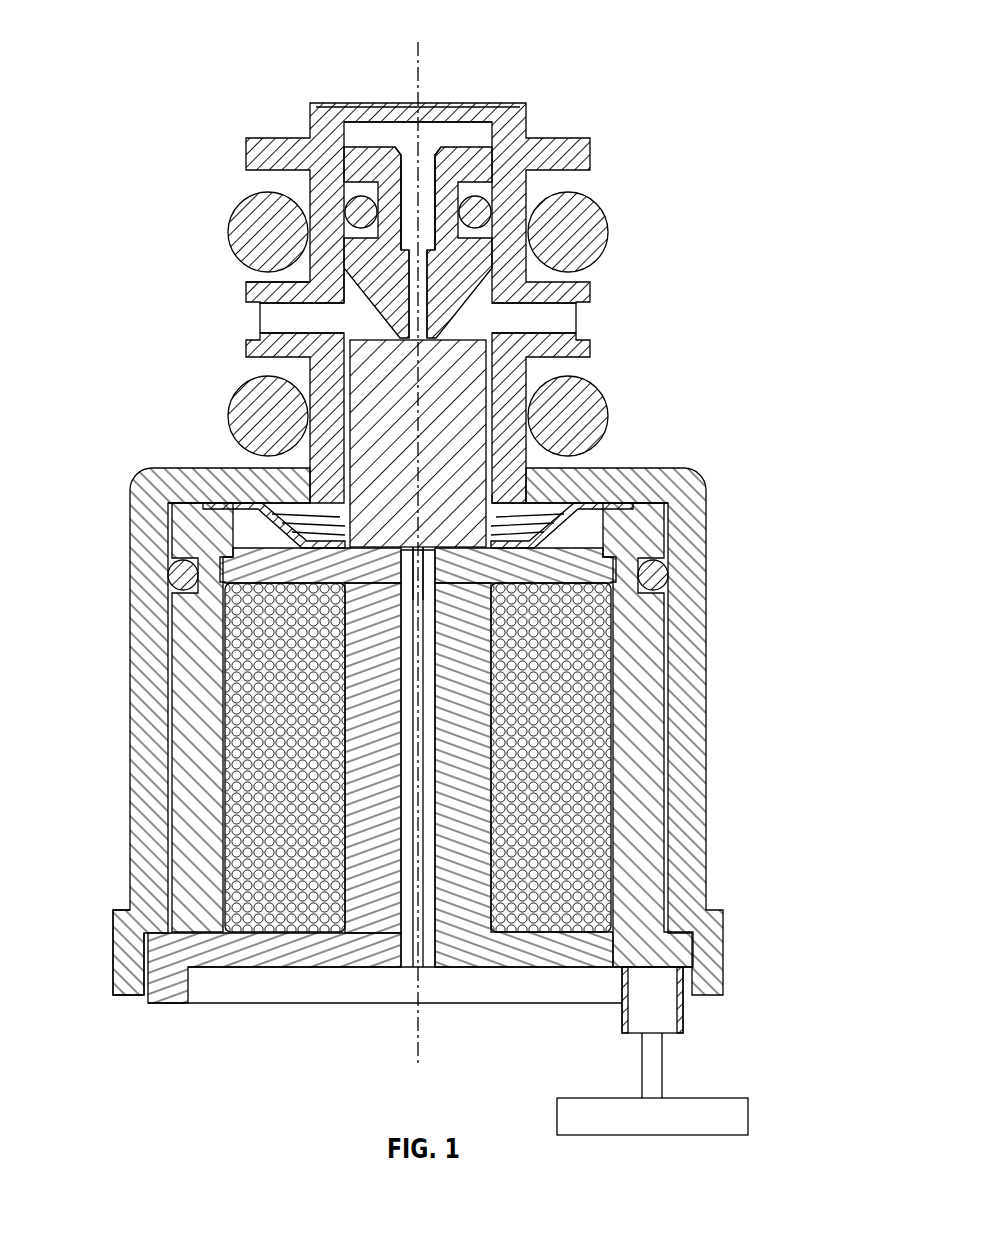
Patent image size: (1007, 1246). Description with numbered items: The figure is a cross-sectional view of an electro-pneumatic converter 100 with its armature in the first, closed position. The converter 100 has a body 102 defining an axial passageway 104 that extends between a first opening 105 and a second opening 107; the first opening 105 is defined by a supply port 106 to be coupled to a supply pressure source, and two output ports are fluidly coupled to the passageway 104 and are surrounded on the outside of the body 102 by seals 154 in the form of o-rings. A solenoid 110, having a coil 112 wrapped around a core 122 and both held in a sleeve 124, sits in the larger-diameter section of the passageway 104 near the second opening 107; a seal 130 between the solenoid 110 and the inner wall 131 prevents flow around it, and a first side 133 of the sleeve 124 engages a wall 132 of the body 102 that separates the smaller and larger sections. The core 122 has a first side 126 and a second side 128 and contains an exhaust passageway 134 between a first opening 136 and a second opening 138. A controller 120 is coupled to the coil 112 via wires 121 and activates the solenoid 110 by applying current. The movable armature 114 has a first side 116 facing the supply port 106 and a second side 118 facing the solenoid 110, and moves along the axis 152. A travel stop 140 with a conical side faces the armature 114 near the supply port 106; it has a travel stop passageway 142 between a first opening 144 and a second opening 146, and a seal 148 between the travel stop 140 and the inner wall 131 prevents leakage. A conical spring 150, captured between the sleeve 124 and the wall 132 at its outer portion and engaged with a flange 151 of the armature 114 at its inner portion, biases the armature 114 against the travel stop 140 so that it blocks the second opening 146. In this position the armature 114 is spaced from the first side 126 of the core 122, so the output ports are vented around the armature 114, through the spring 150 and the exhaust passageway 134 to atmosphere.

The electro-pneumatic converter 100 is at (118, 46).
The body 102 is at (303, 158).
The axial passageway 104 is at (268, 277).
The first opening 105 is at (326, 96).
The supply port 106 is at (362, 118).
The second opening 107 is at (141, 1012).
The solenoid 110 is at (451, 749).
The coil 112 is at (595, 630).
The armature 114 is at (453, 365).
The first side 116 is at (363, 302).
The second side 118 is at (332, 581).
The controller 120 is at (620, 1097).
The wires 121 is at (650, 1062).
The core 122 is at (473, 692).
The sleeve 124 is at (662, 735).
The first side 126 is at (425, 547).
The second side 128 is at (318, 968).
The seal 130 is at (178, 573).
The inner wall 131 is at (176, 689).
The wall 132 is at (215, 478).
The first side 133 is at (663, 502).
The exhaust passageway 134 is at (430, 822).
The first opening 136 is at (488, 507).
The second opening 138 is at (405, 972).
The travel stop 140 is at (468, 157).
The travel stop passageway 142 is at (428, 172).
The first opening 144 is at (397, 136).
The second opening 146 is at (442, 309).
The seal 148 is at (478, 212).
The spring 150 is at (267, 511).
The flange 151 is at (340, 518).
The axis 152 is at (418, 67).
The seals 154 is at (563, 228).